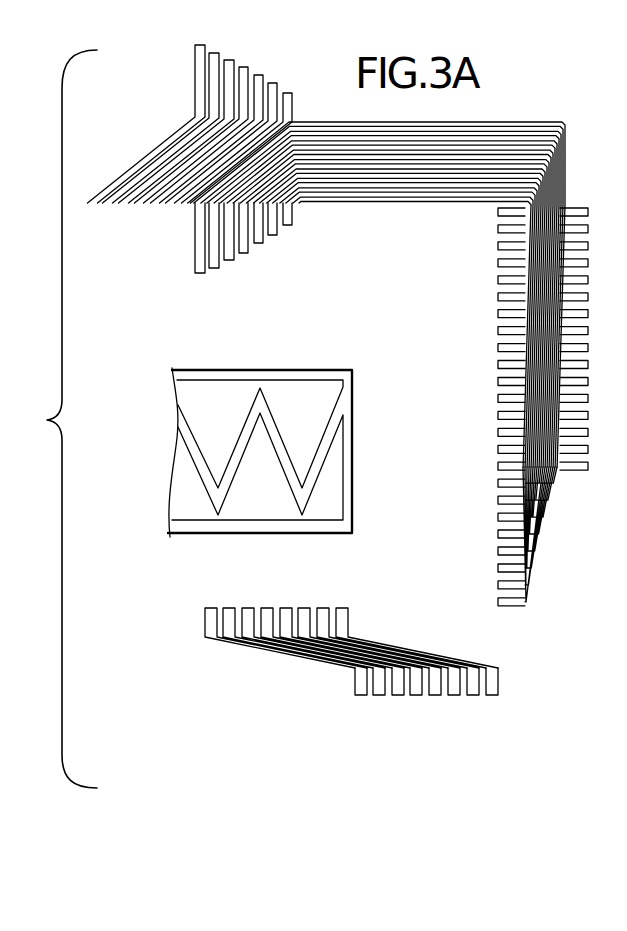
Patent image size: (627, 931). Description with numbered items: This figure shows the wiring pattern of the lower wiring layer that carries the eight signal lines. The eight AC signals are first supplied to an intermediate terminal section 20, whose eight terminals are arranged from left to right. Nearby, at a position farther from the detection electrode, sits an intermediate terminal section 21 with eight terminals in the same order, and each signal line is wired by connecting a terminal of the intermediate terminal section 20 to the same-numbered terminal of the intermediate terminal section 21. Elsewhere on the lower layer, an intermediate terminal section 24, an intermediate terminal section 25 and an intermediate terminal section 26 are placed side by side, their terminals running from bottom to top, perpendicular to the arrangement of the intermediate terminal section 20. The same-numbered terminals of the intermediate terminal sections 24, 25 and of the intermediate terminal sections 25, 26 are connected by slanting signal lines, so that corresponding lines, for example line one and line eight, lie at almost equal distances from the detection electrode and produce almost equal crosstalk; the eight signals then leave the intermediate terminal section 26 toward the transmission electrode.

The intermediate terminal section 20 is at (342, 586).
The intermediate terminal section 21 is at (365, 722).
The intermediate terminal section 24 is at (482, 483).
The intermediate terminal section 25 is at (482, 347).
The intermediate terminal section 26 is at (482, 212).